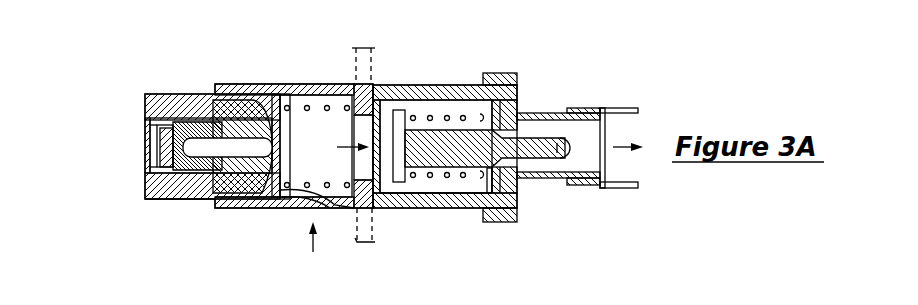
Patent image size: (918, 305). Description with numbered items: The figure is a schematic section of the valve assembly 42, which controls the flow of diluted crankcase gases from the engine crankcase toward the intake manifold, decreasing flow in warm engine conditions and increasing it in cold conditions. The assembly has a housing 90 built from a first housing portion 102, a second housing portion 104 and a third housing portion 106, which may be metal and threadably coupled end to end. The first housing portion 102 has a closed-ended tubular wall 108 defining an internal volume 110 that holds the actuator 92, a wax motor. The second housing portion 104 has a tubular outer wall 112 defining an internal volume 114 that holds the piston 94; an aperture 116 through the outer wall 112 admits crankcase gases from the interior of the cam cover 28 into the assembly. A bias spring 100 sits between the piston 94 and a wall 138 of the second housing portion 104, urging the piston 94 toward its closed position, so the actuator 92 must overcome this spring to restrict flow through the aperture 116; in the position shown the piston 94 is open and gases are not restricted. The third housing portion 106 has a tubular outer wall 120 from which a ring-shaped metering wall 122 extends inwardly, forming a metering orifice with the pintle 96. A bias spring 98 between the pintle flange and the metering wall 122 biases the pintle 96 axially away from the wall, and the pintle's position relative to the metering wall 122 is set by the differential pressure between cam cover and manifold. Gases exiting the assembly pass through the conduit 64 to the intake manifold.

The cam cover 28 is at (375, 242).
The valve assembly 42 is at (446, 44).
The conduit 64 is at (618, 188).
The housing 90 is at (383, 74).
The actuator 92 is at (145, 165).
The piston 94 is at (269, 208).
The pintle 96 is at (558, 145).
The bias spring 98 is at (466, 180).
The bias spring 100 is at (293, 208).
The first housing portion 102 is at (178, 84).
The second housing portion 104 is at (245, 80).
The third housing portion 106 is at (460, 74).
The closed-ended tubular wall 108 is at (162, 200).
The internal volume 110 is at (152, 121).
The outer wall 112 is at (232, 208).
The internal volume 114 is at (338, 175).
The aperture 116 is at (312, 208).
The outer wall 120 is at (418, 208).
The metering wall 122 is at (490, 187).
The wall 138 is at (350, 86).